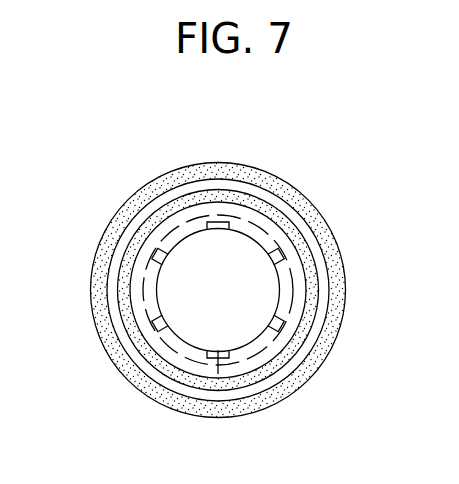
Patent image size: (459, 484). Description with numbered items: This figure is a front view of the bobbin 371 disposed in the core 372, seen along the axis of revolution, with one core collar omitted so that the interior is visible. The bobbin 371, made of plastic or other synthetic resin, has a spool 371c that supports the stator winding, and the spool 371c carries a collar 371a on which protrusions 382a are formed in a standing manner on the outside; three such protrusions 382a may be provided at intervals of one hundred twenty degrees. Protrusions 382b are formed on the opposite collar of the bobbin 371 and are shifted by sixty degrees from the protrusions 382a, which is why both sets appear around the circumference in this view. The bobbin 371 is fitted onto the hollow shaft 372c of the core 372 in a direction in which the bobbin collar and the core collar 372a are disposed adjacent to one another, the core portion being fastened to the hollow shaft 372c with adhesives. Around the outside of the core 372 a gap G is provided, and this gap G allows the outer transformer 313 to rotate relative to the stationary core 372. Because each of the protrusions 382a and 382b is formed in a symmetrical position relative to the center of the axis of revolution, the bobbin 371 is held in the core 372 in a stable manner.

The outer transformer 313 is at (330, 215).
The bobbin 371 is at (336, 306).
The collar 371a is at (289, 352).
The spool 371c is at (293, 276).
The core 372 is at (118, 277).
The core collar 372a is at (300, 246).
The hollow shaft 372c is at (238, 317).
The protrusion 382a is at (218, 229).
The protrusion 382b is at (114, 203).
The gap G is at (250, 192).